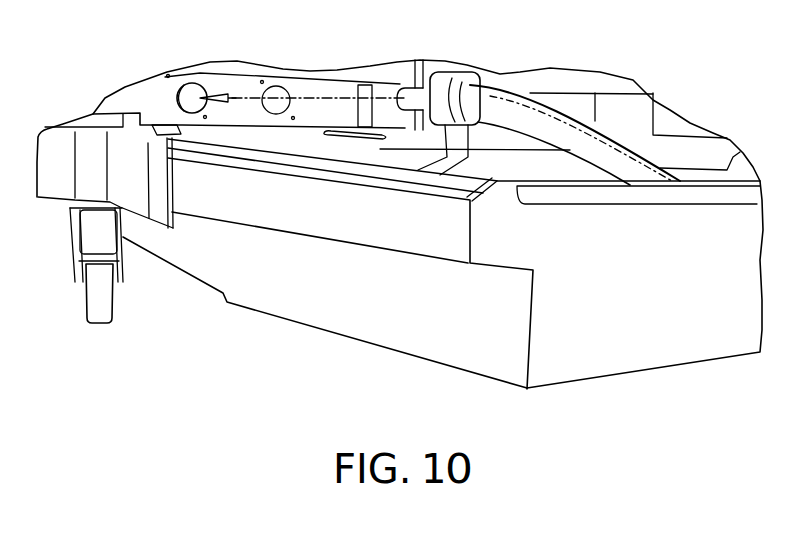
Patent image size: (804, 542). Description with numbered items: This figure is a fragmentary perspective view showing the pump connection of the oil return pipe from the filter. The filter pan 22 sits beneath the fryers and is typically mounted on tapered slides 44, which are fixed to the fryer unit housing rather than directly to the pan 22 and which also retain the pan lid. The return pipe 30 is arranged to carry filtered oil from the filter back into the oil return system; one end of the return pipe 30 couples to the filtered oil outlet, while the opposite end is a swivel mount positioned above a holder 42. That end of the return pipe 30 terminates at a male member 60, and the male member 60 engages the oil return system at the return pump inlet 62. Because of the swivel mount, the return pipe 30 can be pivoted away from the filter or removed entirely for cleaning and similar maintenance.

The filter pan 22 is at (650, 343).
The return pipe 30 is at (516, 110).
The holder 42 is at (450, 78).
The tapered slides 44 is at (158, 212).
The male member 60 is at (407, 98).
The return pump inlet 62 is at (193, 87).